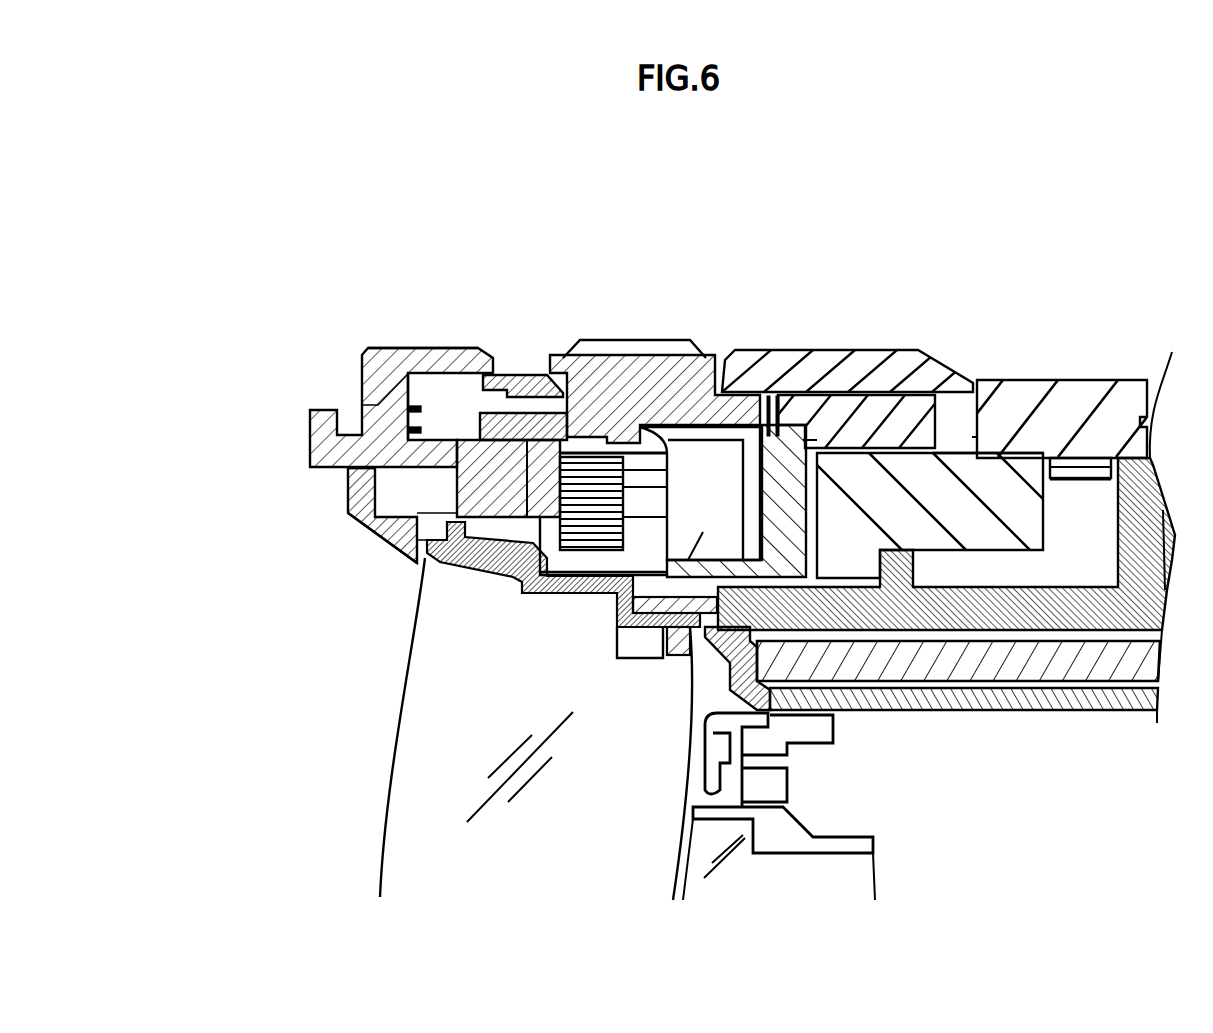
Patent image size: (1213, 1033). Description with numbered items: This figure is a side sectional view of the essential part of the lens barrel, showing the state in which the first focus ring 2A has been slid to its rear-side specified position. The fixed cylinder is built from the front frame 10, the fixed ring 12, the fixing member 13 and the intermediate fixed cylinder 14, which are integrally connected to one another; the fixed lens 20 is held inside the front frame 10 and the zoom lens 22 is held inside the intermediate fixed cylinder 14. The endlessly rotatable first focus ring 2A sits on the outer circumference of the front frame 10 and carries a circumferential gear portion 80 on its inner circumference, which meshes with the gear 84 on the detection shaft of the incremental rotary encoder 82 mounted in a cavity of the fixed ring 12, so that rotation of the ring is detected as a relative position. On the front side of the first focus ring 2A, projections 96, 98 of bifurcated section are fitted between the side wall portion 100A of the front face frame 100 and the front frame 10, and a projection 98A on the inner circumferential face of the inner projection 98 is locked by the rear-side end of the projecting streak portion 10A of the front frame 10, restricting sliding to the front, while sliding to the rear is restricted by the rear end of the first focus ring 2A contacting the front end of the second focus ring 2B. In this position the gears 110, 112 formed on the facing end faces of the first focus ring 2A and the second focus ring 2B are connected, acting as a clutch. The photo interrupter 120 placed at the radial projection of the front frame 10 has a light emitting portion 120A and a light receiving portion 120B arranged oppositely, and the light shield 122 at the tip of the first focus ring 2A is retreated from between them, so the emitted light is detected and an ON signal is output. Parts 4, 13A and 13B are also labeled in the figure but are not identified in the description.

The first focus ring 2A is at (628, 385).
The second focus ring 2B is at (835, 375).
The front cover ring 4 is at (1072, 407).
The front frame 10 is at (312, 448).
The projecting streak portion 10A is at (407, 520).
The fixed ring 12 is at (768, 425).
The fixing member 13 is at (962, 440).
The fixed ring inner step 13A is at (889, 477).
The fixed ring flange 13B is at (803, 420).
The intermediate fixed cylinder 14 is at (1050, 600).
The fixed lens 20 is at (503, 678).
The zoom lens 22 is at (774, 763).
The gear portion 80 is at (652, 425).
The incremental rotary encoder 82 is at (676, 658).
The gear 84 is at (590, 552).
The projection 96 is at (493, 375).
The inner projection 98 is at (518, 413).
The projection 98A is at (474, 560).
The front face frame 100 is at (348, 498).
The side wall portion 100A is at (410, 347).
The gear 110 is at (702, 292).
The gear 112 is at (774, 398).
The photo interrupter 120 is at (443, 393).
The light emitting portion 120A is at (362, 372).
The light receiving portion 120B is at (348, 468).
The light shield 122 is at (429, 567).